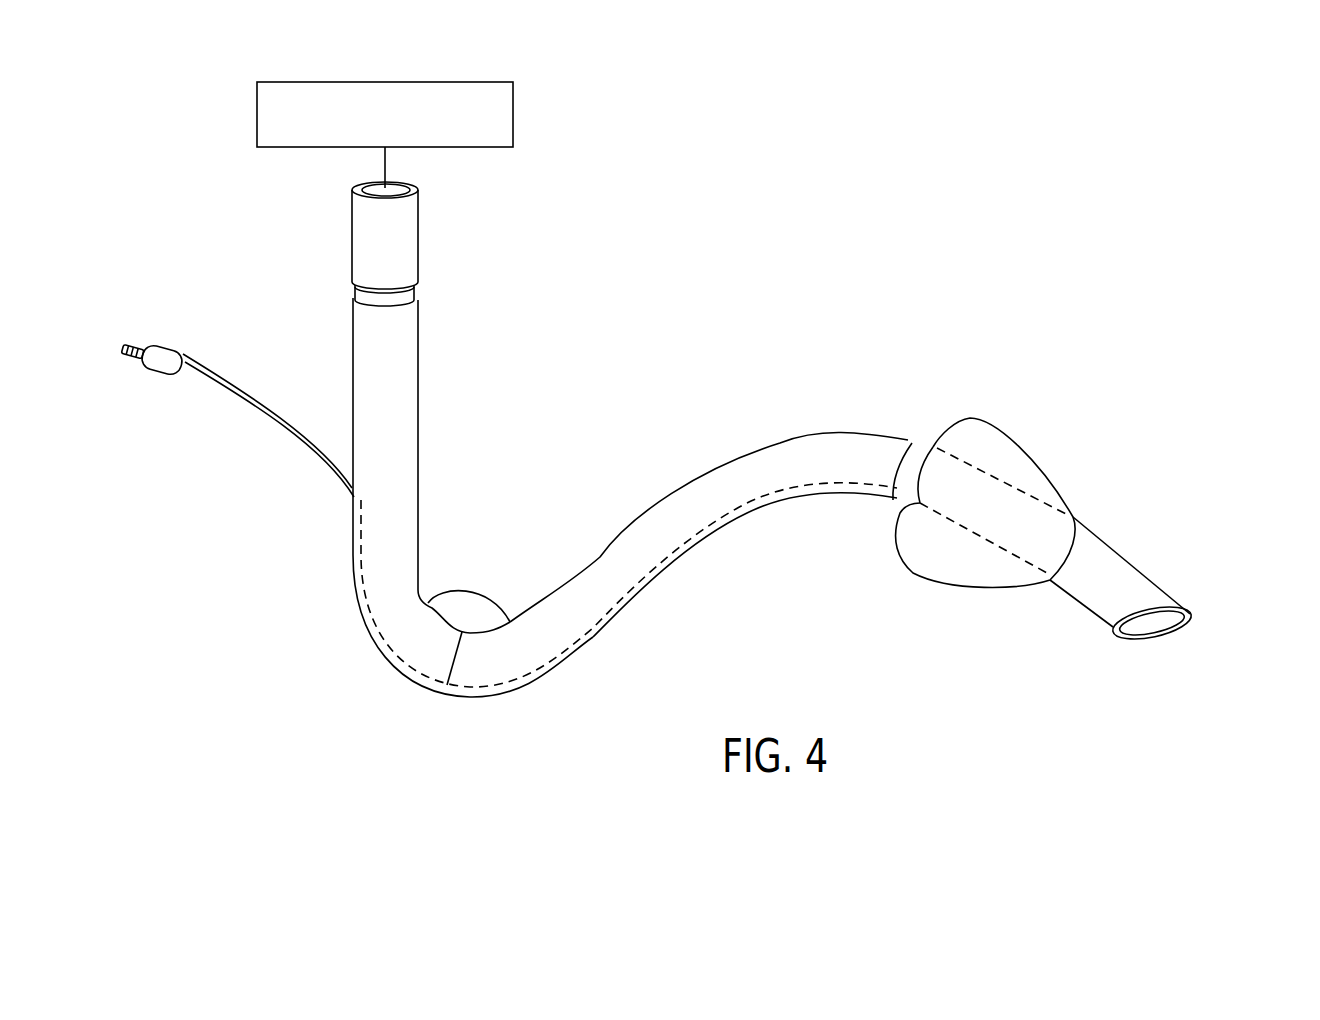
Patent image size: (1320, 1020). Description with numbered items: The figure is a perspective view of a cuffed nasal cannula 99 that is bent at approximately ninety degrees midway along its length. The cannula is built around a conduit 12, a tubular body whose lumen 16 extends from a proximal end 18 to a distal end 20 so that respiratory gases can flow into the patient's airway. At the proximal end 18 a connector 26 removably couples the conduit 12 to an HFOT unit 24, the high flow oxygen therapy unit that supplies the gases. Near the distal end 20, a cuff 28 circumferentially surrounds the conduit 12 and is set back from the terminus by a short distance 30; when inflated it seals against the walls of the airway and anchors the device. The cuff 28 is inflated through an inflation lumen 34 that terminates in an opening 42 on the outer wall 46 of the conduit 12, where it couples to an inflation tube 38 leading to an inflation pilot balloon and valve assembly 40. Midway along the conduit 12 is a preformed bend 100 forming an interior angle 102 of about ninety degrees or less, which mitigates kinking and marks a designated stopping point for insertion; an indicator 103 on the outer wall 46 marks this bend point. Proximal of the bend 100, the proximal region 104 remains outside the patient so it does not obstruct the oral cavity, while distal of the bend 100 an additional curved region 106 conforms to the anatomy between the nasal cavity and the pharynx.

The HFOT unit 24 is at (513, 92).
The connector 26 is at (418, 215).
The proximal end 18 is at (390, 303).
The conduit 12 is at (430, 477).
The bend 100 is at (522, 707).
The curved region 106 is at (815, 410).
The proximal region 104 is at (474, 366).
The nasal cannula 99 is at (257, 198).
The interior angle 102 is at (488, 598).
The indicator 103 is at (455, 657).
The opening 42 is at (346, 492).
The inflation lumen 34 is at (745, 517).
The outer wall 46 is at (594, 641).
The inflation tube 38 is at (237, 383).
The inflation pilot balloon and valve assembly 40 is at (171, 347).
The cuff 28 is at (1013, 440).
The distance 30 is at (1198, 592).
The distal end 20 is at (1177, 636).
The lumen 16 is at (1148, 628).